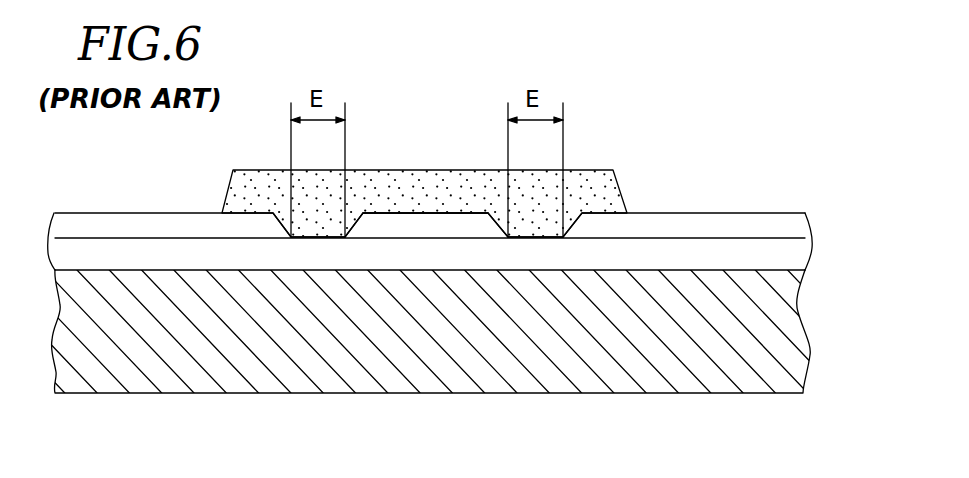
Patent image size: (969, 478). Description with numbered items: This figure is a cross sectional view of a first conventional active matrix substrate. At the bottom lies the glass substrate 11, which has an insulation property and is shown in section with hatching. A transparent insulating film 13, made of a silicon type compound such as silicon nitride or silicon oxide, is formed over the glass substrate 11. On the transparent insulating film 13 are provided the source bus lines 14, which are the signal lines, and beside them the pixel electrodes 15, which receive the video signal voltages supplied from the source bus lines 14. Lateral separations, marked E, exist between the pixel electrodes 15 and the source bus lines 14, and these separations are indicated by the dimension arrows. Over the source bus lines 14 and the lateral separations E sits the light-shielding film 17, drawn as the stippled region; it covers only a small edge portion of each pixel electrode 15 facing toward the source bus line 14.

The glass substrate 11 is at (790, 295).
The transparent insulating film 13 is at (792, 262).
The source bus lines 14 is at (432, 218).
The pixel electrodes 15 is at (138, 227).
The light-shielding film 17 is at (593, 177).